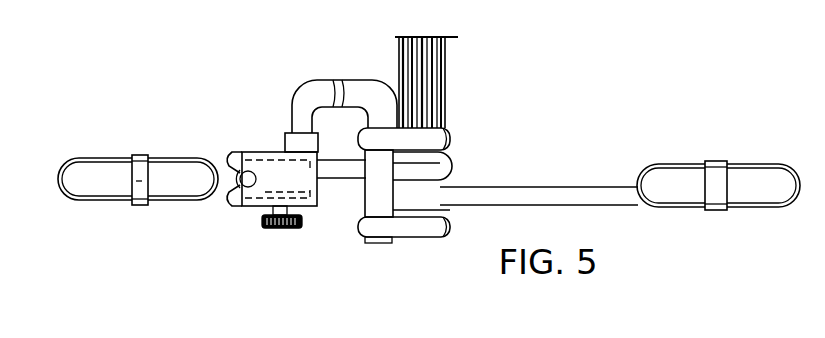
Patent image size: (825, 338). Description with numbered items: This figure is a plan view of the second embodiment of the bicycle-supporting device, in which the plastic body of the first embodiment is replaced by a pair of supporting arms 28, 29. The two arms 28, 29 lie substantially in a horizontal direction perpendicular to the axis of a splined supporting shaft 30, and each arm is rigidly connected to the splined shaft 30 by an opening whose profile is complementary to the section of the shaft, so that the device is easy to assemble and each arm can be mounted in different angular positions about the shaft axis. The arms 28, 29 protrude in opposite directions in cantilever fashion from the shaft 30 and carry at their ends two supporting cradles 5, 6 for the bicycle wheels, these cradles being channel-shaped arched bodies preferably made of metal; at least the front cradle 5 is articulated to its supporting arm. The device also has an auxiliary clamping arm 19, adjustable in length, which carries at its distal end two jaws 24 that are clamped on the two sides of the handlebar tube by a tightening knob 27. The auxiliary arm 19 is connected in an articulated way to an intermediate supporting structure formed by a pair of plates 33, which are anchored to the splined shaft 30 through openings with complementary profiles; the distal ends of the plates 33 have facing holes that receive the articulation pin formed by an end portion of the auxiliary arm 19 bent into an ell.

The front supporting cradle 5 is at (80, 158).
The supporting cradle 6 is at (780, 162).
The auxiliary clamping arm 19 is at (362, 84).
The jaws 24 is at (258, 146).
The tightening knob 27 is at (272, 228).
The supporting arm 28 is at (336, 173).
The supporting arm 29 is at (568, 192).
The splined supporting shaft 30 is at (430, 60).
The plates 33 is at (453, 217).